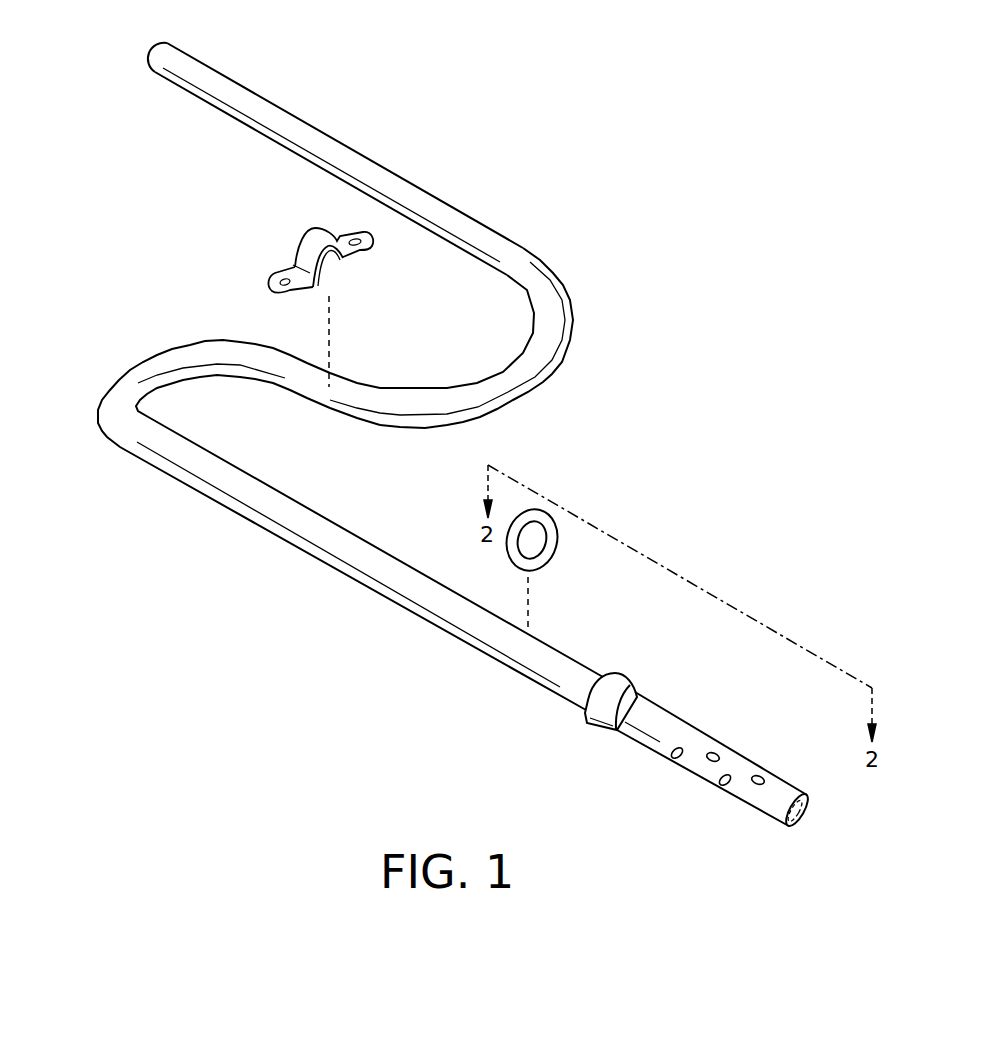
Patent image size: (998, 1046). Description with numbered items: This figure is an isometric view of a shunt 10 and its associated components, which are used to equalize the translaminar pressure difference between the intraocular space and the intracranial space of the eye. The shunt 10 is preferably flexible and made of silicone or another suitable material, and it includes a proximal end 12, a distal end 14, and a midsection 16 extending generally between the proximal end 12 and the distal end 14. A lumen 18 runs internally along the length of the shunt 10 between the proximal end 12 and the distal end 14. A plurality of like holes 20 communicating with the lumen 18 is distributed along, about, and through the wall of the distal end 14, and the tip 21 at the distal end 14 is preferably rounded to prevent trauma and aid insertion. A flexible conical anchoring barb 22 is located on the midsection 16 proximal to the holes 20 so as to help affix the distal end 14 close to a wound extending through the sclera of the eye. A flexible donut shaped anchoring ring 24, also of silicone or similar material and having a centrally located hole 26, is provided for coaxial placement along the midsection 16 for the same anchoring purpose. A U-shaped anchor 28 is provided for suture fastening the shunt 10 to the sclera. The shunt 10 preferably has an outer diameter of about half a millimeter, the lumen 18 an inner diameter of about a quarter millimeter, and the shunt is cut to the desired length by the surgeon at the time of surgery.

The shunt 10 is at (878, 260).
The proximal end 12 is at (387, 368).
The distal end 14 is at (732, 776).
The midsection 16 is at (503, 338).
The lumen 18 is at (832, 838).
The holes 20 is at (719, 762).
The tip 21 is at (829, 803).
The conical anchoring barb 22 is at (646, 682).
The donut shaped anchoring ring 24 is at (566, 547).
The centrally located hole 26 is at (566, 551).
The U-shaped anchor 28 is at (294, 293).